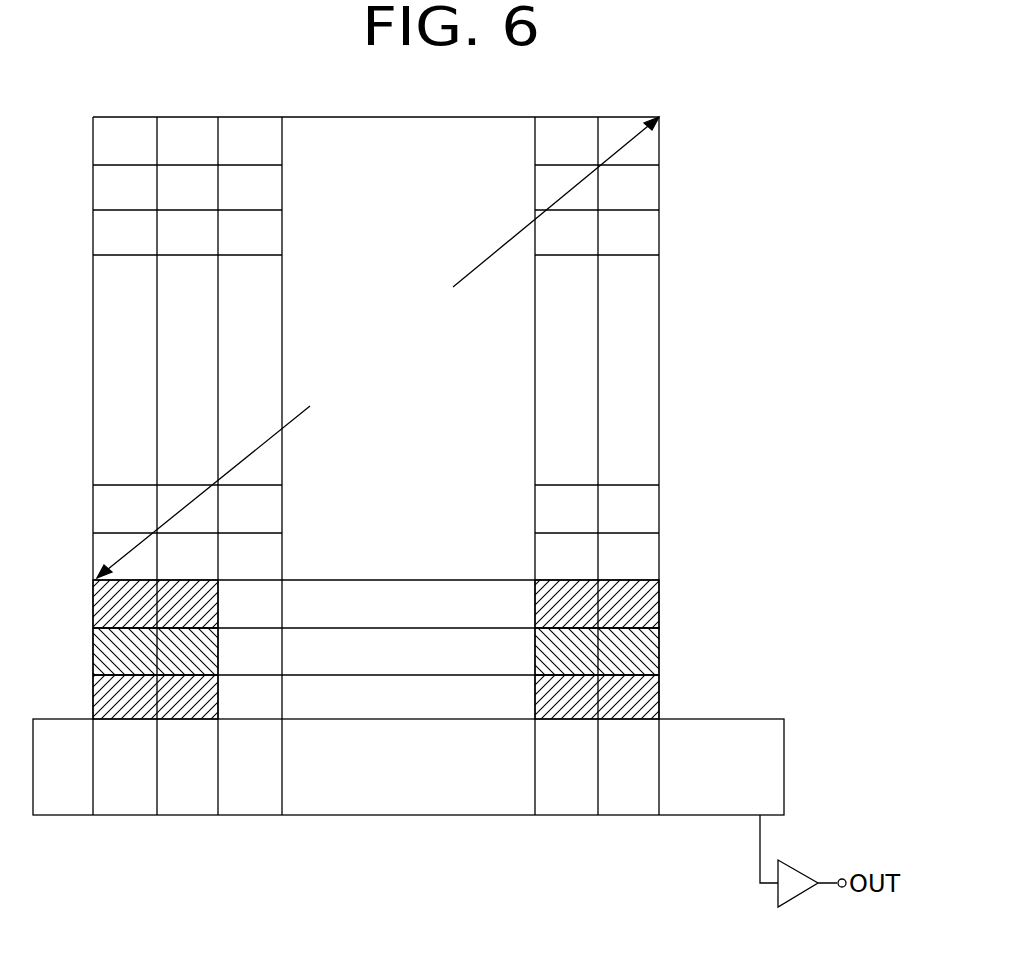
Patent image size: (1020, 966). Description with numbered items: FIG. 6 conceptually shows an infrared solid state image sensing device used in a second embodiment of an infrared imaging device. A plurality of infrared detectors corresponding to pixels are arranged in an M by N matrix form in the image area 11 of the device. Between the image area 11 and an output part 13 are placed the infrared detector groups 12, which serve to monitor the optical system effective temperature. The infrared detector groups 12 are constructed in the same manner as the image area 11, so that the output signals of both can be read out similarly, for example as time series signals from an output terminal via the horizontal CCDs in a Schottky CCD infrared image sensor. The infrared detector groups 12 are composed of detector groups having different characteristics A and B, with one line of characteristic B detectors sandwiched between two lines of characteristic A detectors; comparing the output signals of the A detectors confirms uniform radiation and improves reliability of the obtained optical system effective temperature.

The image area 11 is at (680, 117).
The infrared detector groups 12 is at (680, 583).
The output part 13 is at (799, 709).